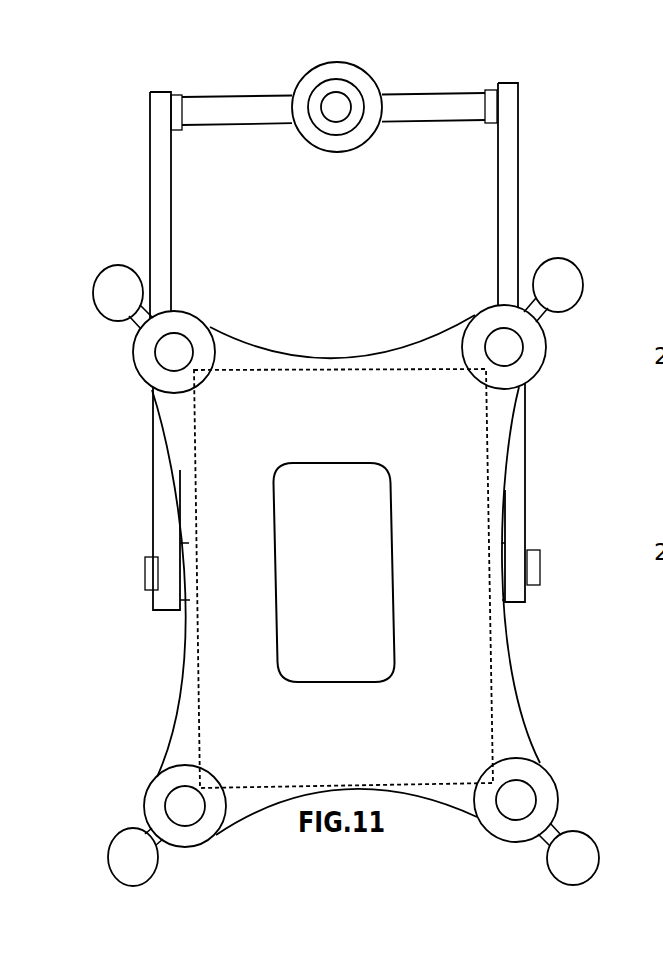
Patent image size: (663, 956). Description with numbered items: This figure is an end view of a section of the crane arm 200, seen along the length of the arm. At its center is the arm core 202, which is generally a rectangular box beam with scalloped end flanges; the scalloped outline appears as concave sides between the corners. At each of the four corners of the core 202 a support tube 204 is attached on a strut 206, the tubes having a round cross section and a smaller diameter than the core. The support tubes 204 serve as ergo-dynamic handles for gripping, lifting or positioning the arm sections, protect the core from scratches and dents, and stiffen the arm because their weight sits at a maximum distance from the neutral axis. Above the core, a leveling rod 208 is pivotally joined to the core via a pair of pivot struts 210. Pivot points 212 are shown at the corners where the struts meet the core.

The wheeled frame assembly 200 is at (118, 209).
The arm core 202 is at (390, 368).
The support tube 204 is at (113, 280).
The strut 206 is at (127, 325).
The leveling rod 208 is at (327, 142).
The pivot strut 210 is at (162, 217).
The hub / pivot 212 is at (533, 348).